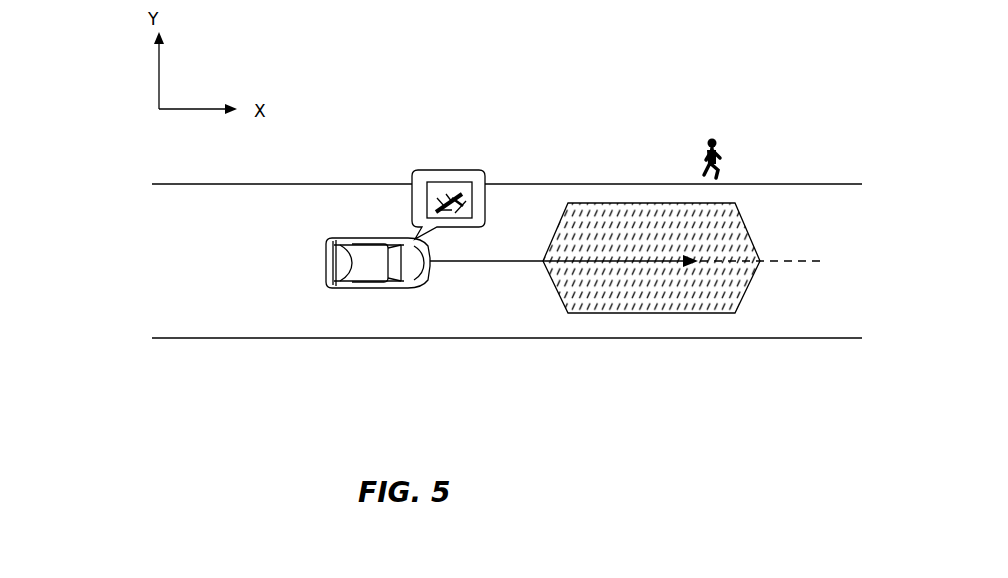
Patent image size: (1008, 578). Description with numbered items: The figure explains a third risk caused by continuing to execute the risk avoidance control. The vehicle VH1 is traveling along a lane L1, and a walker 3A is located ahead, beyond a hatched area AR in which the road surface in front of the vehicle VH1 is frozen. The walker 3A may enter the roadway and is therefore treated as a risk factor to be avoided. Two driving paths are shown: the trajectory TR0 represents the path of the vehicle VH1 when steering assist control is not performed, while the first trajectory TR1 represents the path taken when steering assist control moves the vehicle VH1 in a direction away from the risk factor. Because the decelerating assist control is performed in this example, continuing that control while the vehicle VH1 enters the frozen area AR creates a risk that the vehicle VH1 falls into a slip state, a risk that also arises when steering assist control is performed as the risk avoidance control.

The lane L1 is at (454, 261).
The vehicle VH1 is at (376, 238).
The area AR is at (602, 203).
The first trajectory TR1 is at (564, 281).
The trajectory TR0 is at (785, 260).
The walker 3A is at (718, 145).